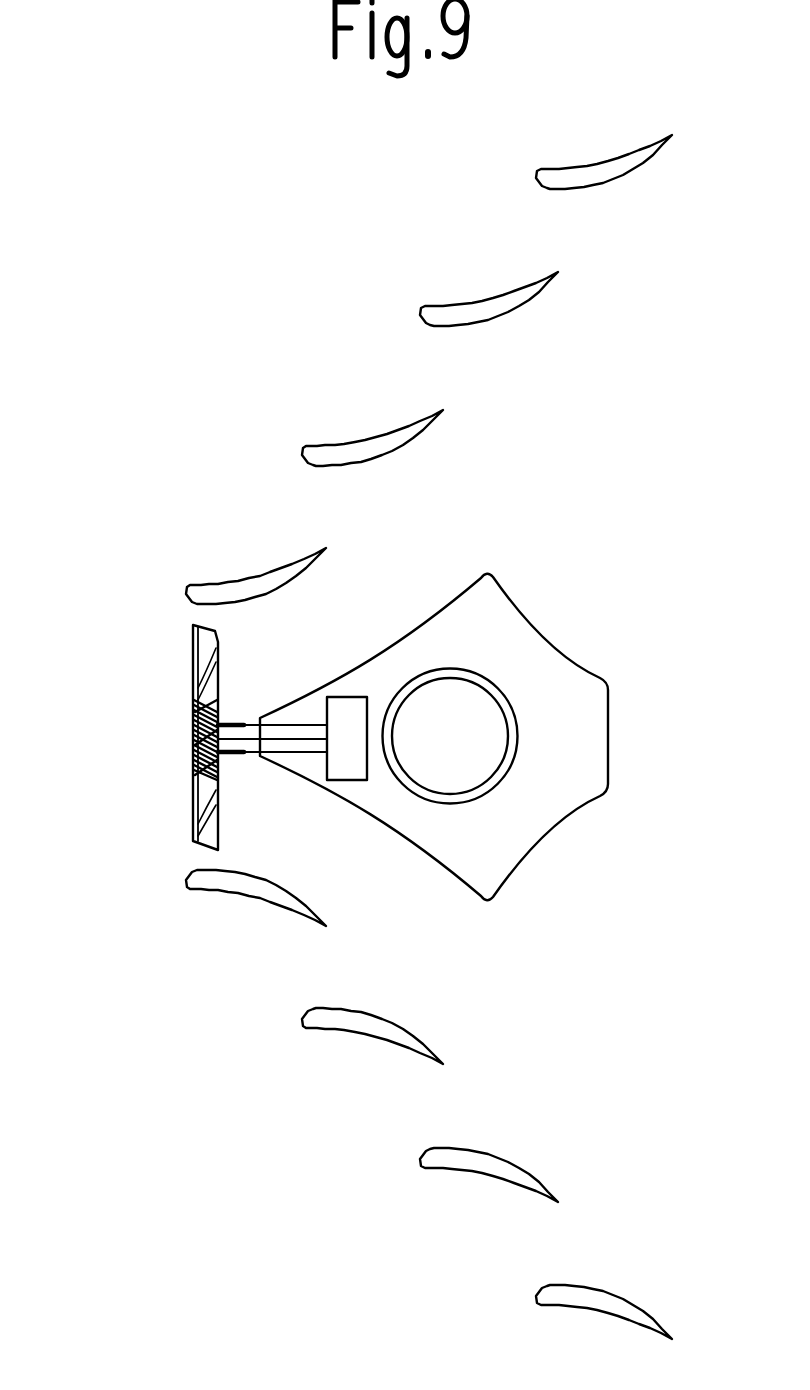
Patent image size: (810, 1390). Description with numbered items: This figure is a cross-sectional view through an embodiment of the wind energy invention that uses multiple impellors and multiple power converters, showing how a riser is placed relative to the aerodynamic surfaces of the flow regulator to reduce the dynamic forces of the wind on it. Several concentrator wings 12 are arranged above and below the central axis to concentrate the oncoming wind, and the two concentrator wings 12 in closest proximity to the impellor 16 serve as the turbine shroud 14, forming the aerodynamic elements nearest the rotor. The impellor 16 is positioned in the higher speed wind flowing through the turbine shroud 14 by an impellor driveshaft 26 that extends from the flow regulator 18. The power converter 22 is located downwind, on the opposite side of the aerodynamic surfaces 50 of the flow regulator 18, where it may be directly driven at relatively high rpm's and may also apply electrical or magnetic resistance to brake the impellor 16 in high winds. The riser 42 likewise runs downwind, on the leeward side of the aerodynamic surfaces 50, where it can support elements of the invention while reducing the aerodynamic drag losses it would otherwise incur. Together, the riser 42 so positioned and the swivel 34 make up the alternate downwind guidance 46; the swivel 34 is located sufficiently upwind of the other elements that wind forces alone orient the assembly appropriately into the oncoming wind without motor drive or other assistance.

The concentrator wings 12 is at (222, 548).
The turbine shroud 14 is at (222, 592).
The impellor 16 is at (197, 690).
The flow regulator 18 is at (446, 728).
The power converter 22 is at (347, 753).
The impellor driveshaft 26 is at (238, 732).
The swivel 34 is at (493, 790).
The riser 42 is at (492, 693).
The alternate downwind guidance 46 is at (428, 761).
The aerodynamic surfaces 50 is at (400, 640).